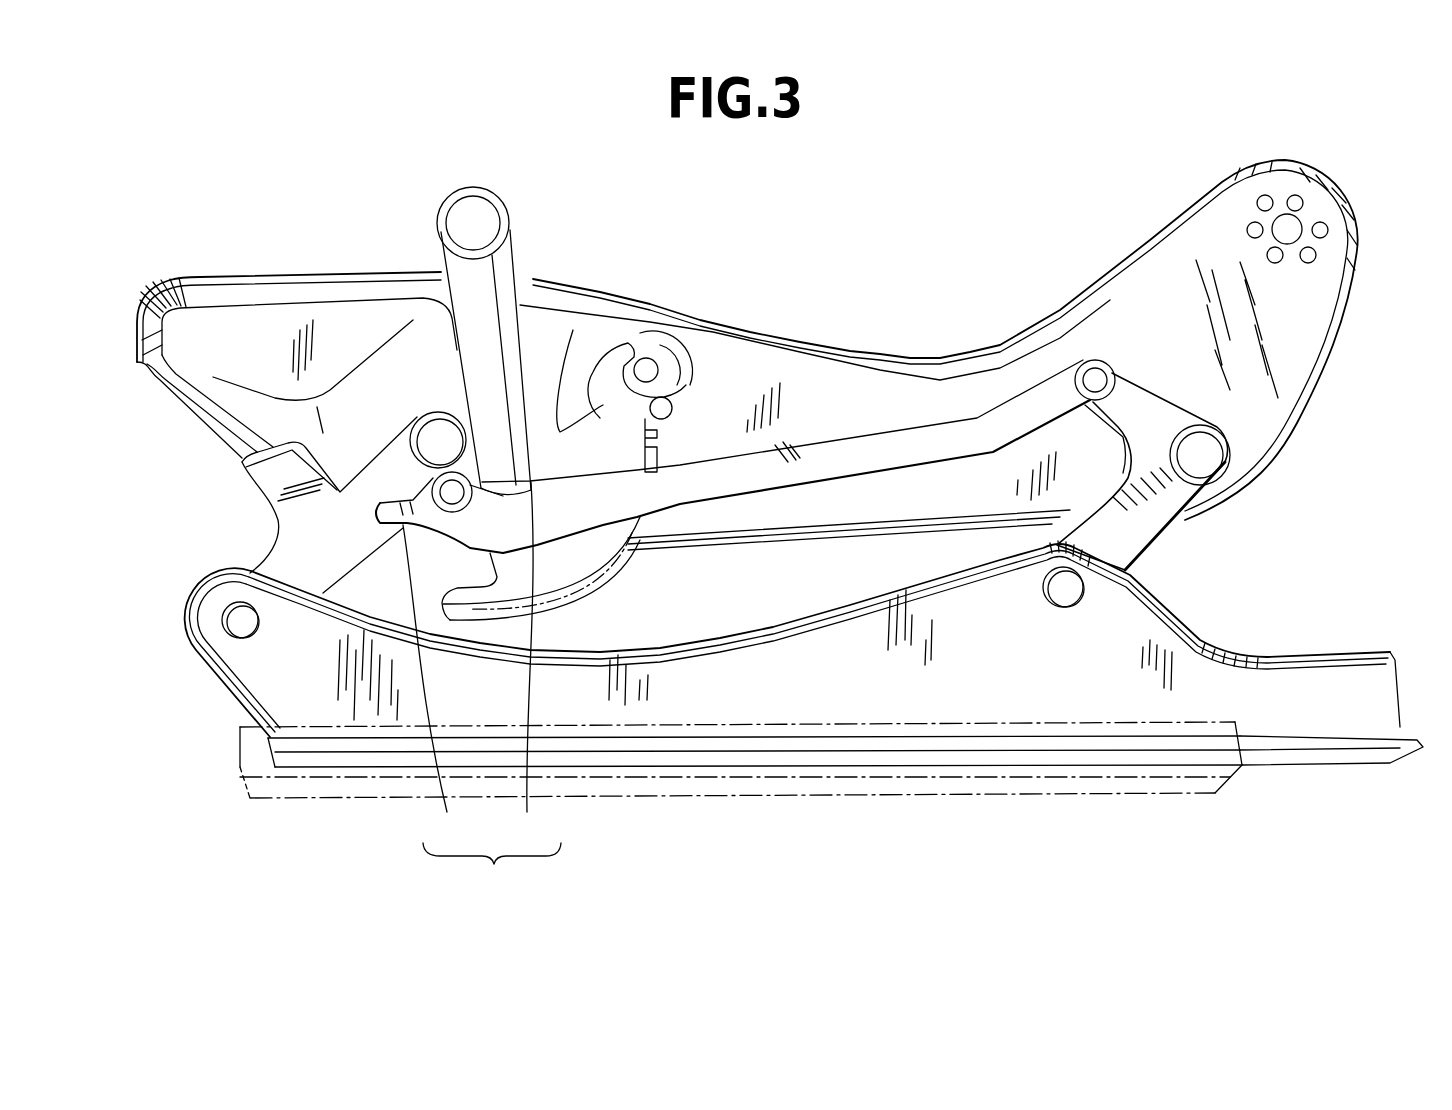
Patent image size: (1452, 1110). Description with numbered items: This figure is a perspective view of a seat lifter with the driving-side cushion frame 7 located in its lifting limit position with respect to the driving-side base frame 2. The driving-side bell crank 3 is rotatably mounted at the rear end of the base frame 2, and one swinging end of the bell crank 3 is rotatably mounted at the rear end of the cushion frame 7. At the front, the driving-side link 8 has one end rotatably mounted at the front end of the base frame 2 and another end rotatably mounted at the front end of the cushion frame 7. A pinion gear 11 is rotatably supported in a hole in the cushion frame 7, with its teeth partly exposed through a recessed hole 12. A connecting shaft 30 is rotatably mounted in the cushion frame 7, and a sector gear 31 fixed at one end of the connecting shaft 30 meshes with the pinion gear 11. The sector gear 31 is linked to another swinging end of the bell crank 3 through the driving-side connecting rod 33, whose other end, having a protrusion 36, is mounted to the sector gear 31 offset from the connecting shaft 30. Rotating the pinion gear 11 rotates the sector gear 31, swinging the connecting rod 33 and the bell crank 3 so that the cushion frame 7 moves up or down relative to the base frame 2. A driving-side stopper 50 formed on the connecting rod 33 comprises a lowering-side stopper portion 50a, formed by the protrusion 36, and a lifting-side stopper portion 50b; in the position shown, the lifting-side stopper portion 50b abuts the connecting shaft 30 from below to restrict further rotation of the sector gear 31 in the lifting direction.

The driving-side base frame 2 is at (255, 675).
The driving-side bell crank 3 is at (1130, 533).
The driving-side cushion frame 7 is at (243, 325).
The driving-side link 8 is at (297, 543).
The pinion gear 11 is at (672, 415).
The recessed hole 12 is at (668, 414).
The connecting shaft 30 is at (500, 273).
The sector gear 31 is at (557, 437).
The driving-side connecting rod 33 is at (963, 427).
The protrusion 36 is at (403, 525).
The driving-side stopper 50 is at (492, 868).
The lowering-side stopper portion 50a is at (442, 685).
The lifting-side stopper portion 50b is at (536, 664).